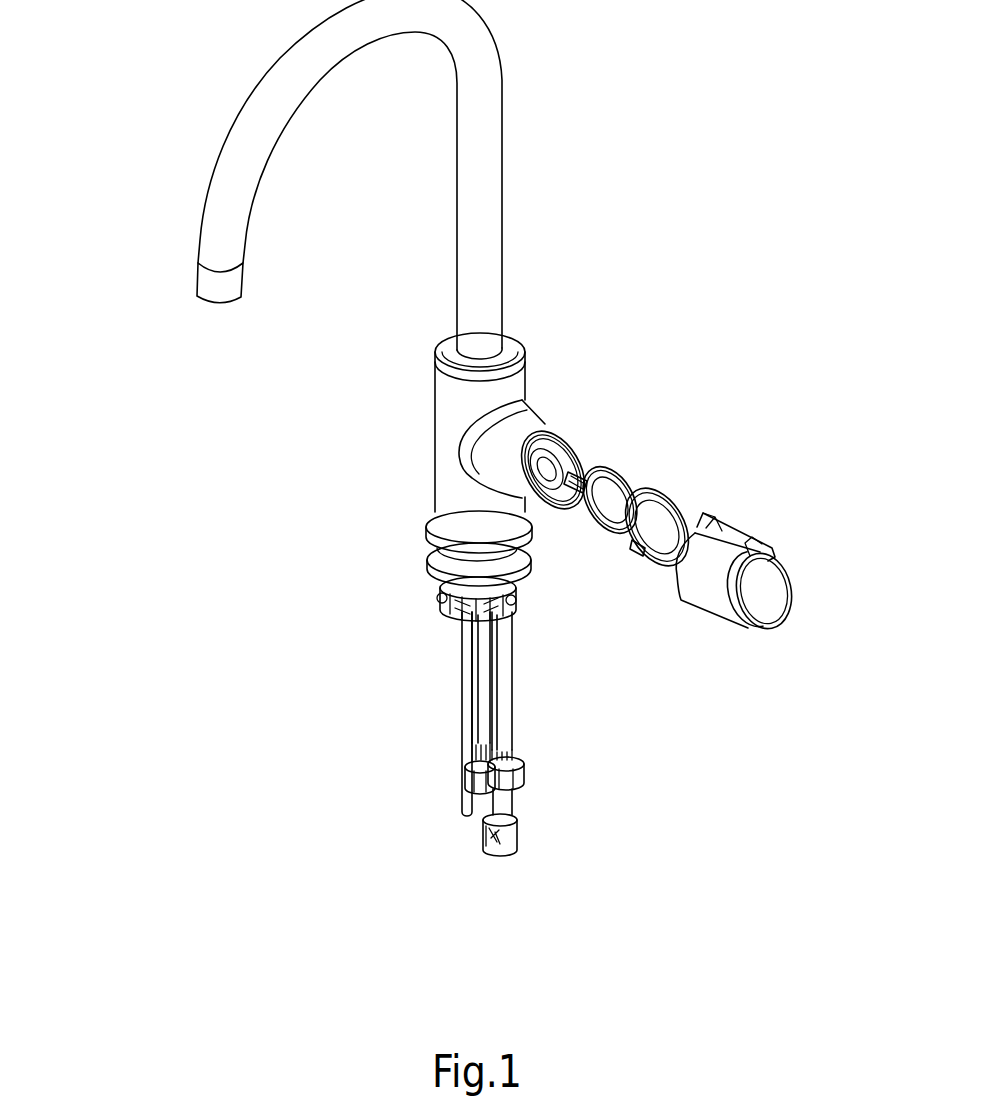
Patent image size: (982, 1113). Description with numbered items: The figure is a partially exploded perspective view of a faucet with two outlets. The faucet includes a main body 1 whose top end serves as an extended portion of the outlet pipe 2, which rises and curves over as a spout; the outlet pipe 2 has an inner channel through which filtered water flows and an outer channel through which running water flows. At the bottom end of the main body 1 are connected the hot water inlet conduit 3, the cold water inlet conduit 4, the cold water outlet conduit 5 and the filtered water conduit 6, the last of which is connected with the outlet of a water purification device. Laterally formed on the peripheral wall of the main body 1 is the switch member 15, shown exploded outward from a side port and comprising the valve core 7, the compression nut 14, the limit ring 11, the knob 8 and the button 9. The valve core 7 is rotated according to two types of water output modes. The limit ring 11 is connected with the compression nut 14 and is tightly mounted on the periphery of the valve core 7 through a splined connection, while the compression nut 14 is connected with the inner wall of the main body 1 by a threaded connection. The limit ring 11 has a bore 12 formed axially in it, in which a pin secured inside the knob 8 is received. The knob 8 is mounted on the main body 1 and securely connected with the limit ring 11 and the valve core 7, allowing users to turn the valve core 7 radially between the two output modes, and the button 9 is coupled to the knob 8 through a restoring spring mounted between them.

The main body 1 is at (443, 385).
The outlet pipe 2 is at (191, 163).
The hot water inlet conduit 3 is at (460, 686).
The cold water inlet conduit 4 is at (513, 700).
The cold water outlet conduit 5 is at (512, 802).
The filtered water conduit 6 is at (447, 810).
The valve core 7 is at (558, 429).
The knob 8 is at (741, 541).
The button 9 is at (741, 517).
The limit ring 11 is at (631, 556).
The bore 12 is at (669, 485).
The compression nut 14 is at (606, 458).
The switch member 15 is at (872, 370).